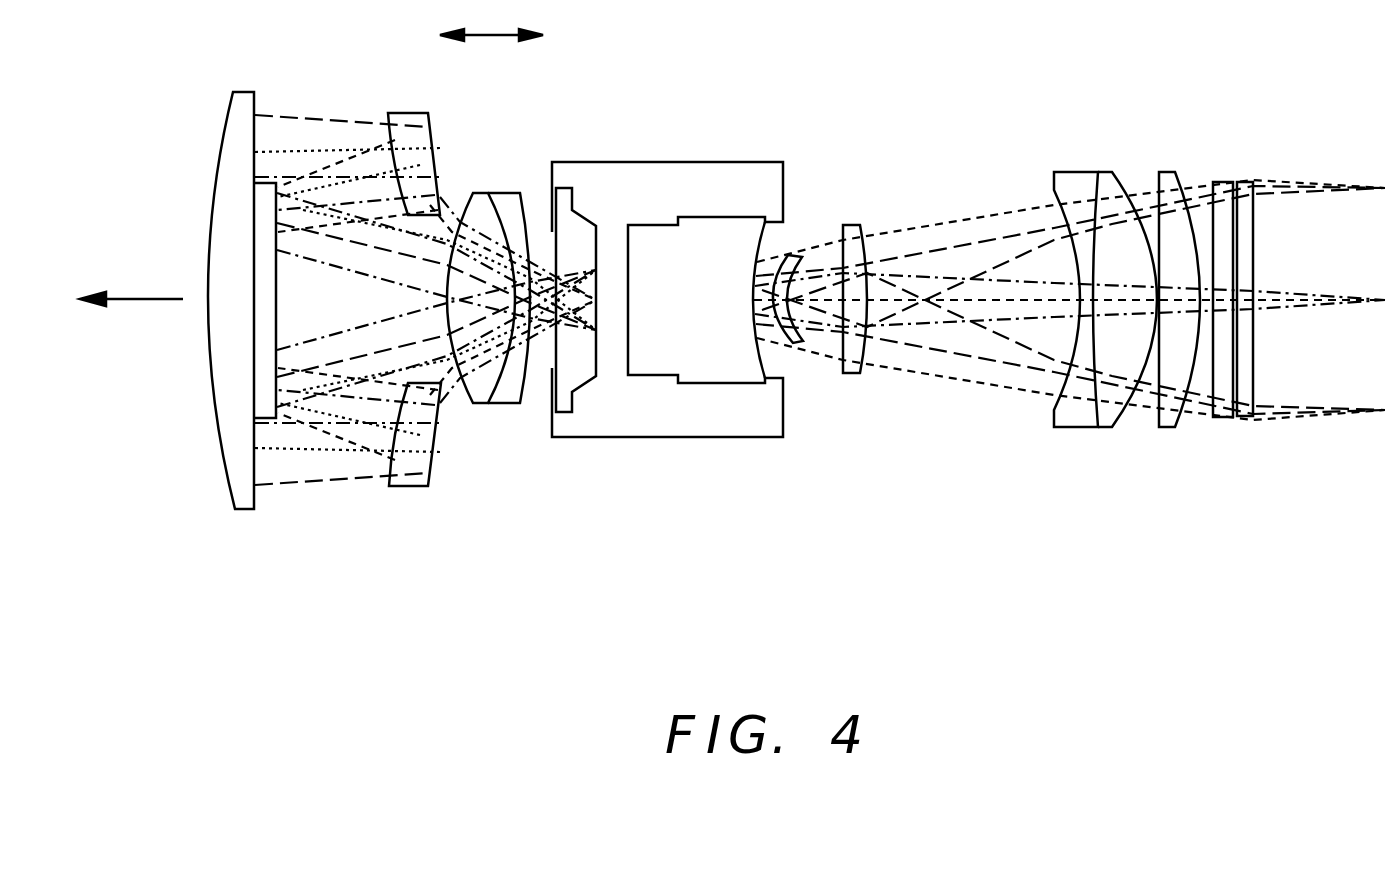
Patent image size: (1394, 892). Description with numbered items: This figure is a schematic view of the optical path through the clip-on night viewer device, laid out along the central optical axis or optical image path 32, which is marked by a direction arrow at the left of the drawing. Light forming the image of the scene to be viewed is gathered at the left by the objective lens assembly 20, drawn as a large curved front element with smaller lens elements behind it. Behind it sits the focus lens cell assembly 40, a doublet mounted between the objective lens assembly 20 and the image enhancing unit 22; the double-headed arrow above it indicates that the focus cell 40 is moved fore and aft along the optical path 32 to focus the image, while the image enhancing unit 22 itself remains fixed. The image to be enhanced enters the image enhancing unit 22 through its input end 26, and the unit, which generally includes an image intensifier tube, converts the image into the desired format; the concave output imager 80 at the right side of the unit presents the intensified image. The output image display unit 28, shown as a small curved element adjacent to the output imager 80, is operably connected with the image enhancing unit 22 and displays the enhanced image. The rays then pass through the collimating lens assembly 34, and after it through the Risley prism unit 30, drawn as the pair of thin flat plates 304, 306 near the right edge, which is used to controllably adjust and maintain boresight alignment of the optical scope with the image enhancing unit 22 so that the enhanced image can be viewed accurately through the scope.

The objective lens assembly 20 is at (244, 540).
The image enhancing unit 22 is at (679, 277).
The input end 26 is at (534, 174).
The output image display unit 28 is at (803, 228).
The Risley prism unit 30 is at (1233, 316).
The optical image path 32 is at (152, 299).
The collimating lens assembly 34 is at (1107, 455).
The focus lens cell assembly 40 is at (490, 452).
The output imager 80 is at (782, 362).
The filter plate 304 is at (1220, 180).
The cover plate 306 is at (1248, 180).